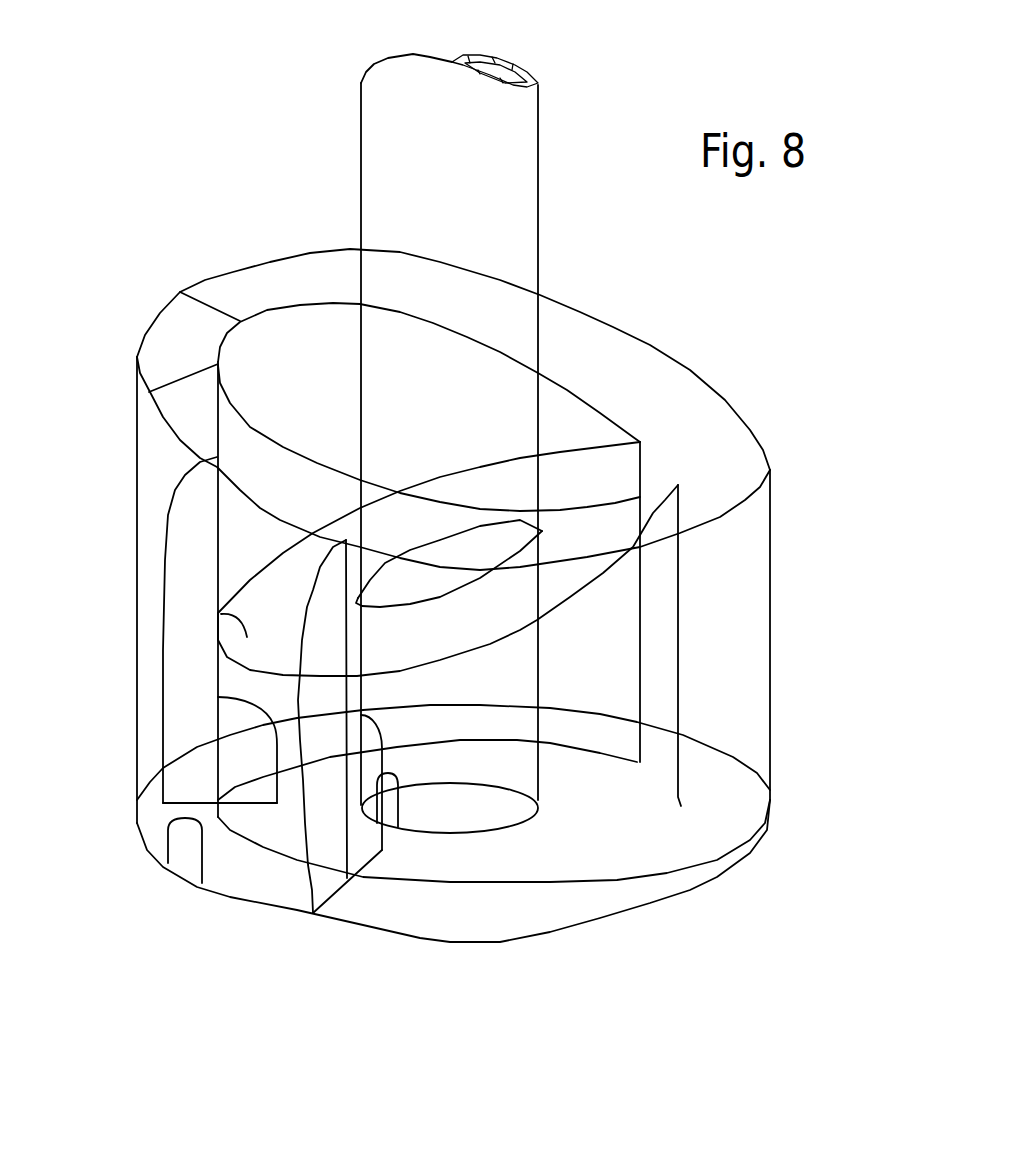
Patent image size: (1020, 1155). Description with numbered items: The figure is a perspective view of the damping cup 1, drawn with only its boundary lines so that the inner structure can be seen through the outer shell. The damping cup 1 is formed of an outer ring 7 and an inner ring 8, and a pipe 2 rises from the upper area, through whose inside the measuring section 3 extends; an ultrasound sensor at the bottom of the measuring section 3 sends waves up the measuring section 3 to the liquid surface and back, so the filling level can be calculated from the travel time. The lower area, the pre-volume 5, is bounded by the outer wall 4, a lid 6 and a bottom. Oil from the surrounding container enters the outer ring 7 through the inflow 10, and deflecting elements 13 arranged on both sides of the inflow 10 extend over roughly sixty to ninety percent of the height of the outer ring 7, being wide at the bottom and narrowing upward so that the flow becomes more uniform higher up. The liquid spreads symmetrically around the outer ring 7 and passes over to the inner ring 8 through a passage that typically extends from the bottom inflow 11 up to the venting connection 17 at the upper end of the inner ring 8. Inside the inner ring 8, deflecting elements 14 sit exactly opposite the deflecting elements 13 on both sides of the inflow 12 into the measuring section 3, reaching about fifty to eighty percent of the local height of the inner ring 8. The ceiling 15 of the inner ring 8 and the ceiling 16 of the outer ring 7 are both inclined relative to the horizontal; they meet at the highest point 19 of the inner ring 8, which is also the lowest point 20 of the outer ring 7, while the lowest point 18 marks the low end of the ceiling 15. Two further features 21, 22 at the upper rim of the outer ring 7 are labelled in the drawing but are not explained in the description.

The damping cup 1 is at (130, 74).
The pipe 2 is at (500, 429).
The measuring section 3 is at (530, 83).
The outer wall 4 is at (430, 536).
The pre-volume 5 is at (453, 399).
The lid 6 is at (420, 492).
The outer ring 7 is at (453, 880).
The inner ring 8 is at (450, 923).
The inflow 10 is at (136, 901).
The bottom inflow 11 is at (491, 859).
The inflow 12 is at (352, 922).
The deflecting elements 13 is at (233, 685).
The deflecting elements 14 is at (213, 850).
The ceiling 15 is at (479, 774).
The ceiling 16 is at (697, 330).
The venting connection 17 is at (759, 519).
The lowest point 18 is at (164, 630).
The highest point 19 is at (729, 402).
The lowest point 20 is at (524, 587).
The recess 21 is at (154, 309).
The recess edge 22 is at (180, 257).